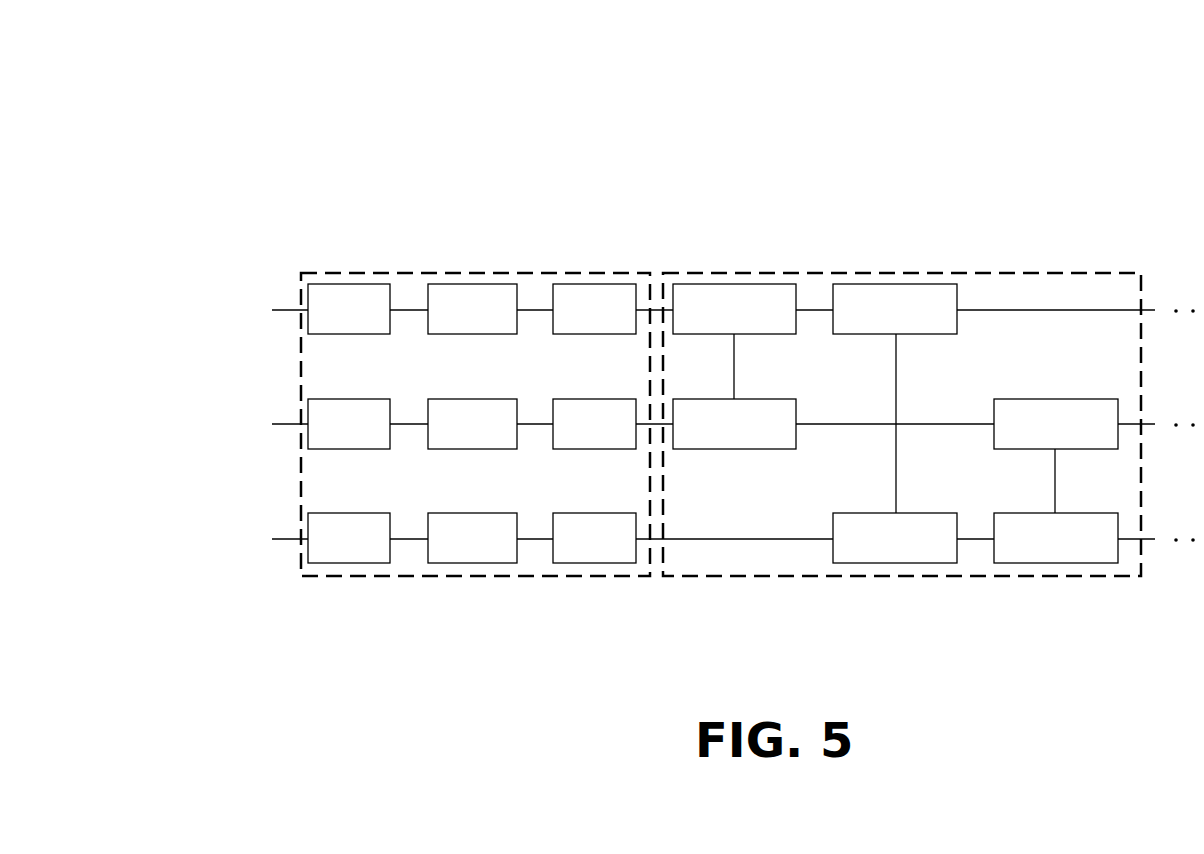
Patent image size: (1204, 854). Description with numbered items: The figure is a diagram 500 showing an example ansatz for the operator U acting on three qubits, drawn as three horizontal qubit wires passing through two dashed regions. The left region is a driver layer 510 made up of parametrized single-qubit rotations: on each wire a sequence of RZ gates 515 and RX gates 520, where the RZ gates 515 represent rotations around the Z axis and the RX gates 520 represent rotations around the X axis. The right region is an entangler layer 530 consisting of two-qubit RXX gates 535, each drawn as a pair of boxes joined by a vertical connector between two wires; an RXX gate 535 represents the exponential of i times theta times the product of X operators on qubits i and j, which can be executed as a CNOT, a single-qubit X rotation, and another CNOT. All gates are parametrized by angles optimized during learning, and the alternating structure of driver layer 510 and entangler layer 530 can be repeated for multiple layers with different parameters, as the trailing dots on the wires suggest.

The diagram 500 is at (252, 76).
The driver layer 510 is at (360, 271).
The RZ gates 515 is at (338, 563).
The RX gates 520 is at (472, 563).
The entangler layer 530 is at (768, 271).
The RXX gates 535 is at (912, 513).